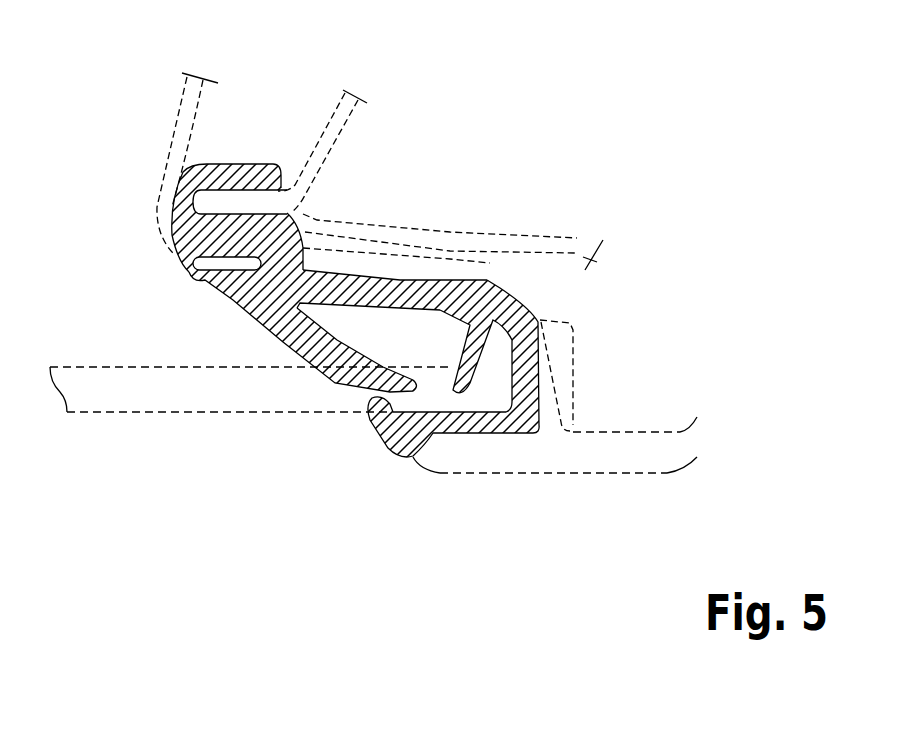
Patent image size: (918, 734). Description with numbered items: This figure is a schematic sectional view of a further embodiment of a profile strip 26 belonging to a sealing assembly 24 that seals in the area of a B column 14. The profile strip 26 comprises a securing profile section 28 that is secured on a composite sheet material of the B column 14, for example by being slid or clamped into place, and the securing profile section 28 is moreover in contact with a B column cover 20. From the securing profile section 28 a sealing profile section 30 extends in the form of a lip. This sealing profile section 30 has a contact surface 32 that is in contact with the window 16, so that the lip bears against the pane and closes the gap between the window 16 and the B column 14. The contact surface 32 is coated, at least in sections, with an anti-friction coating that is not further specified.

The B column 14 is at (563, 237).
The window 16 is at (141, 403).
The B column cover 20 is at (593, 477).
The sealing assembly 24 is at (592, 308).
The profile strip 26 is at (212, 292).
The securing profile section 28 is at (403, 282).
The sealing profile section 30 is at (303, 353).
The contact surface 32 is at (330, 370).